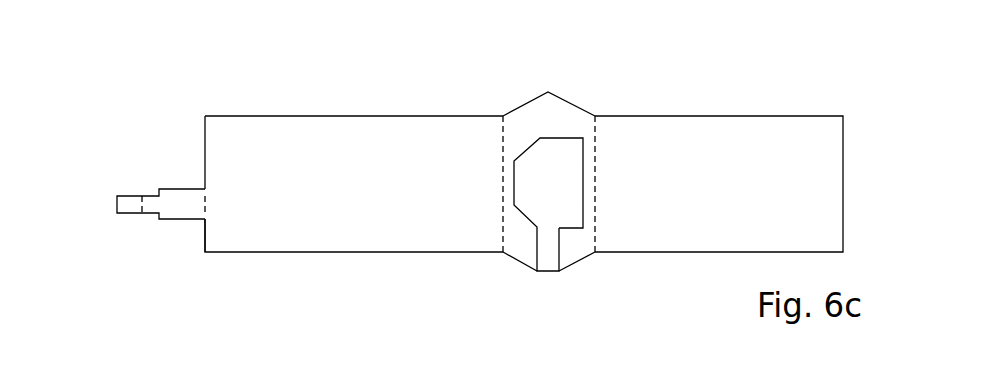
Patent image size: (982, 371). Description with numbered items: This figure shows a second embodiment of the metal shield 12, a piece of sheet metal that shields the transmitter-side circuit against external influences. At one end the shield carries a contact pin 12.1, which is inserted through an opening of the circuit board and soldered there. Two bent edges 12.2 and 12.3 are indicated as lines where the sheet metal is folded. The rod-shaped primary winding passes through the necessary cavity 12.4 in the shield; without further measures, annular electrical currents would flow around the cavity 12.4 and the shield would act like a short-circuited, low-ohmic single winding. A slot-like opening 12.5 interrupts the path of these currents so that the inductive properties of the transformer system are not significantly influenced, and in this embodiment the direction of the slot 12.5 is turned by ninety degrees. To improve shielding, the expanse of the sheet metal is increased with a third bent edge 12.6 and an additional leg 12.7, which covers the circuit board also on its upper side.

The metal shield 12 is at (781, 132).
The contact pin 12.1 is at (128, 198).
The bent edge 12.2 is at (204, 200).
The bent edge 12.3 is at (500, 220).
The cavity 12.4 is at (563, 160).
The slot-like opening 12.5 is at (548, 262).
The third bent edge 12.6 is at (582, 242).
The leg 12.7 is at (550, 105).